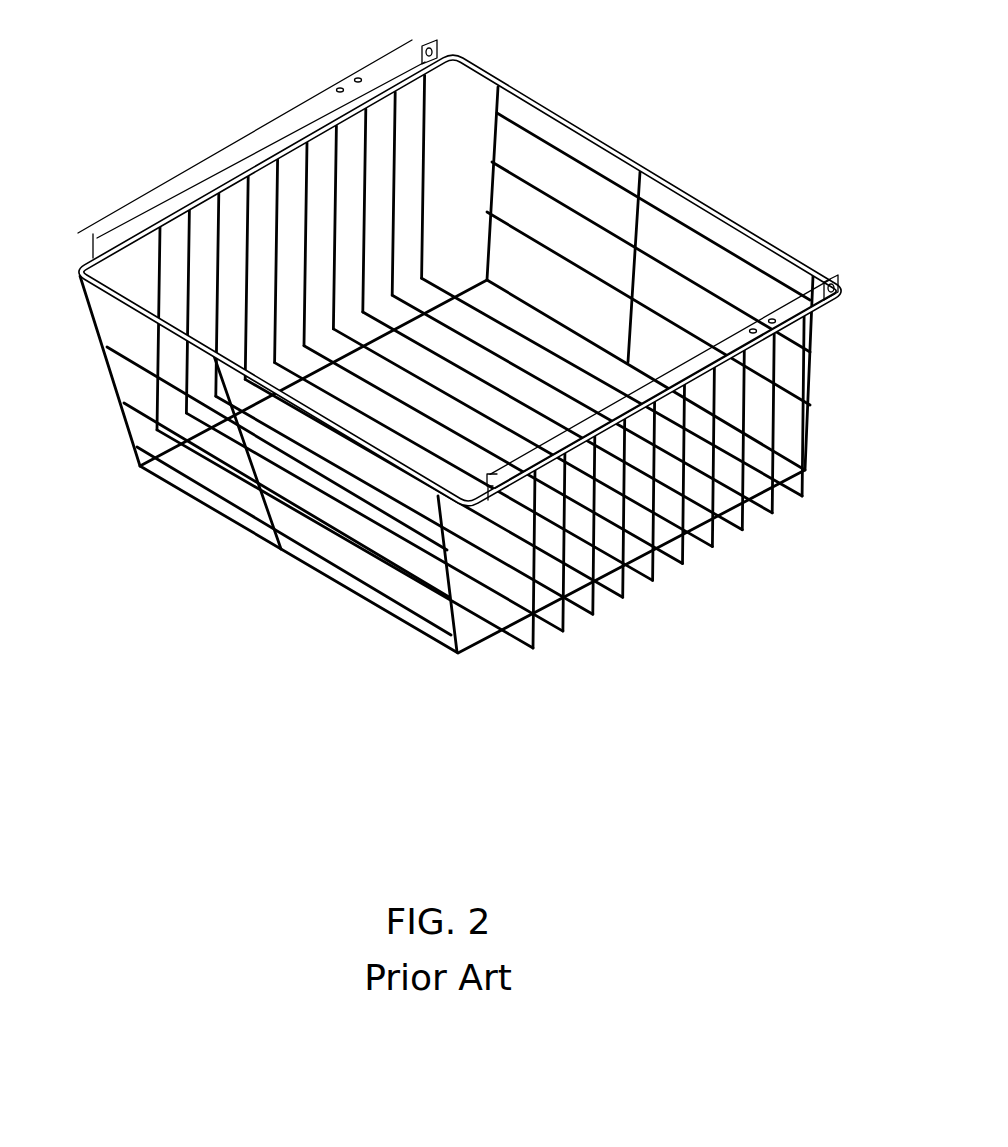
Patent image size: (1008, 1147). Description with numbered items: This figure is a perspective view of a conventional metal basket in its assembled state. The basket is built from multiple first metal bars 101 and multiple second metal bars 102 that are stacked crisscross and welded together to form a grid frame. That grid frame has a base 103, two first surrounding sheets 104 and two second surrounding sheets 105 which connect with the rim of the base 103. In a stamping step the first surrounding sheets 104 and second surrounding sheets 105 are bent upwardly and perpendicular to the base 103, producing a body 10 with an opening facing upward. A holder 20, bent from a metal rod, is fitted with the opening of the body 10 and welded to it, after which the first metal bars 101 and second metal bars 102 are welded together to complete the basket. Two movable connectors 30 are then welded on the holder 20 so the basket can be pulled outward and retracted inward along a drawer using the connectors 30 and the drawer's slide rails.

The body 10 is at (125, 421).
The holder 20 is at (620, 148).
The movable connector 30 is at (236, 136).
The first metal bar 101 is at (490, 635).
The second metal bar 102 is at (485, 552).
The base 103 is at (483, 413).
The first surrounding sheet 104 is at (680, 270).
The second surrounding sheet 105 is at (247, 235).